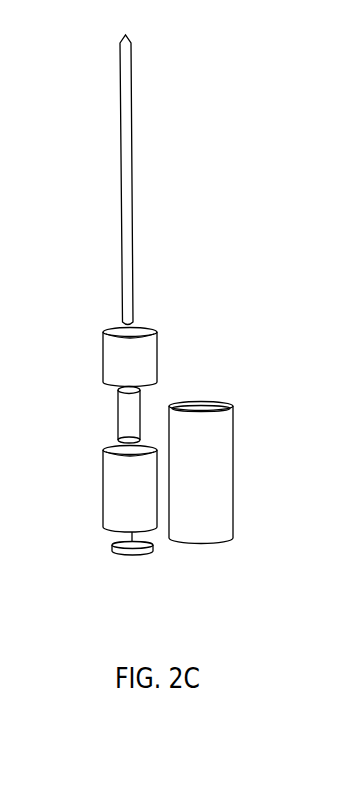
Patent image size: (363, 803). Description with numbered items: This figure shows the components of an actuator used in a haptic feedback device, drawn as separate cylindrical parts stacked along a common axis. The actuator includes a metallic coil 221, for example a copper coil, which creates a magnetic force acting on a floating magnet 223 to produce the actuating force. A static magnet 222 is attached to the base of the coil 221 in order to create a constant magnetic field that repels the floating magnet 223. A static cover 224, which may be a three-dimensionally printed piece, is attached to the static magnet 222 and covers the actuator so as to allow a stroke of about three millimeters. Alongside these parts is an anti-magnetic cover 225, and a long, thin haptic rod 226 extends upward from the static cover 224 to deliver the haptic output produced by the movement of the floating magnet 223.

The metallic coil 221 is at (102, 508).
The static magnet 222 is at (112, 550).
The floating magnet 223 is at (118, 433).
The static cover 224 is at (102, 375).
The anti-magnetic cover 225 is at (233, 478).
The haptic rod 226 is at (133, 148).